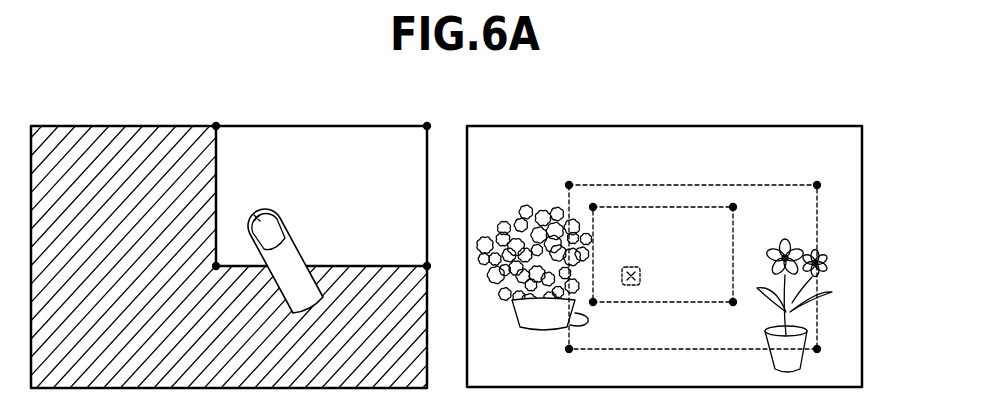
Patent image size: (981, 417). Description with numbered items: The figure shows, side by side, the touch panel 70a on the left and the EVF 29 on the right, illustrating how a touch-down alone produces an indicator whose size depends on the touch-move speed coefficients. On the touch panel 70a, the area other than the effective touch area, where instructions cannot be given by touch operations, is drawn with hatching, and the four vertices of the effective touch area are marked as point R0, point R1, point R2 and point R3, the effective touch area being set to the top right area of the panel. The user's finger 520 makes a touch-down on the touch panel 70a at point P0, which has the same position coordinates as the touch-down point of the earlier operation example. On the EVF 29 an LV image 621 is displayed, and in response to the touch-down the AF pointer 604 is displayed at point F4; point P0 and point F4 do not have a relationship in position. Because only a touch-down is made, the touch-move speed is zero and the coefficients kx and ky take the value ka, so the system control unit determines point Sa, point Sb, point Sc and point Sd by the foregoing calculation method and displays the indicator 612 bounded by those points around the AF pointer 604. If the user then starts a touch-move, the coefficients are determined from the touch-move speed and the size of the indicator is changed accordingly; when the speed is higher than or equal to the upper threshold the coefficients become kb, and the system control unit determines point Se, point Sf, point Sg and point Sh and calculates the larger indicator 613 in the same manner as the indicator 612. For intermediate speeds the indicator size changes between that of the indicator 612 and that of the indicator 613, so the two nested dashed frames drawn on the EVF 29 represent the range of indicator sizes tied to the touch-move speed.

The touch panel 70a is at (118, 128).
The point R1 is at (216, 124).
The point R2 is at (427, 124).
The point R0 is at (218, 265).
The point R3 is at (426, 265).
The point P0 is at (261, 216).
The finger 520 is at (297, 243).
The EVF 29 is at (551, 126).
The indicator 613 is at (763, 184).
The indicator 612 is at (678, 206).
The point Sf is at (569, 184).
The point Sg is at (817, 184).
The point Sh is at (819, 349).
The point Se is at (567, 349).
The point Sb is at (594, 206).
The point Sc is at (735, 207).
The point Sd is at (732, 304).
The point Sa is at (595, 304).
The AF pointer 604 is at (667, 253).
The point F4 is at (631, 266).
The LV image 621 is at (696, 279).